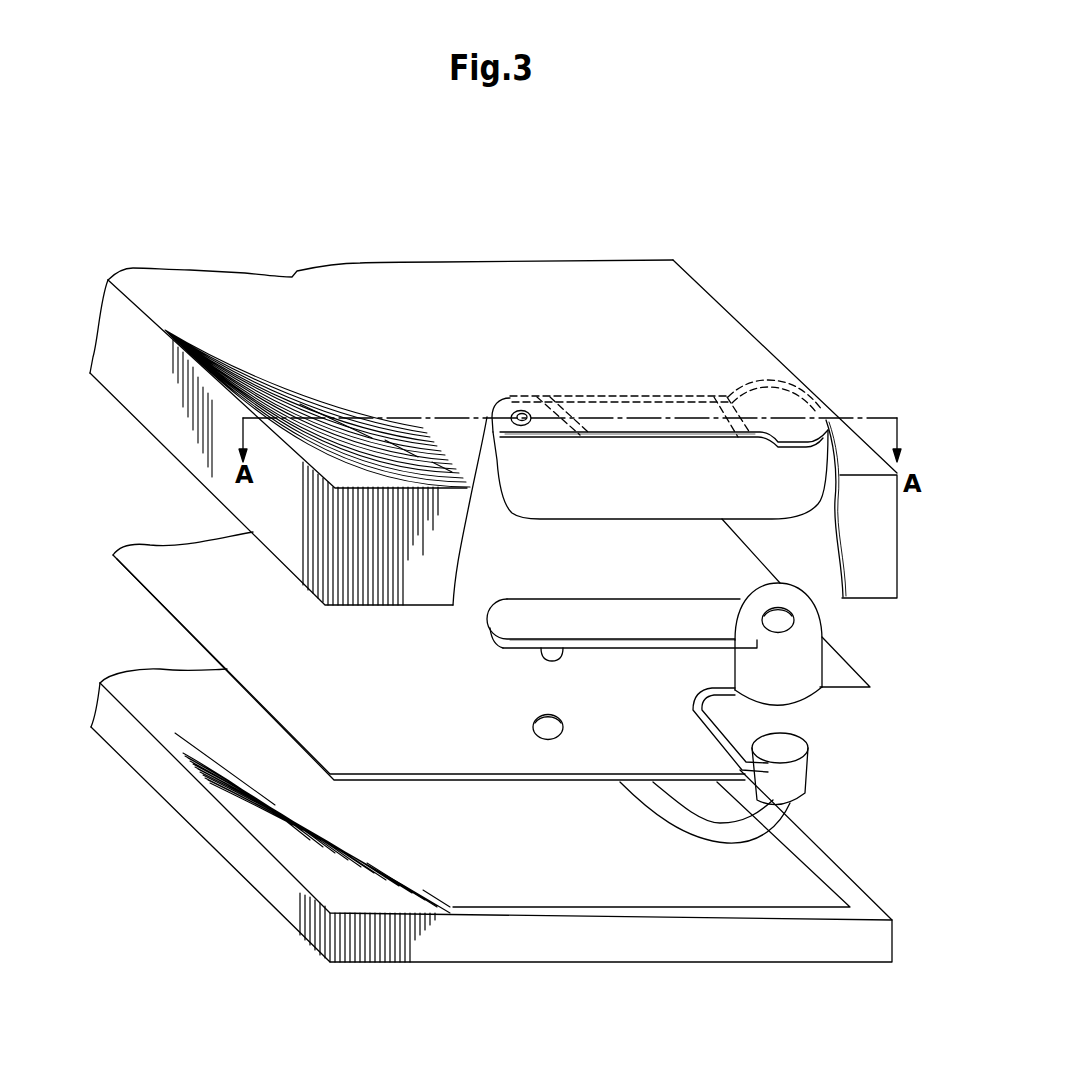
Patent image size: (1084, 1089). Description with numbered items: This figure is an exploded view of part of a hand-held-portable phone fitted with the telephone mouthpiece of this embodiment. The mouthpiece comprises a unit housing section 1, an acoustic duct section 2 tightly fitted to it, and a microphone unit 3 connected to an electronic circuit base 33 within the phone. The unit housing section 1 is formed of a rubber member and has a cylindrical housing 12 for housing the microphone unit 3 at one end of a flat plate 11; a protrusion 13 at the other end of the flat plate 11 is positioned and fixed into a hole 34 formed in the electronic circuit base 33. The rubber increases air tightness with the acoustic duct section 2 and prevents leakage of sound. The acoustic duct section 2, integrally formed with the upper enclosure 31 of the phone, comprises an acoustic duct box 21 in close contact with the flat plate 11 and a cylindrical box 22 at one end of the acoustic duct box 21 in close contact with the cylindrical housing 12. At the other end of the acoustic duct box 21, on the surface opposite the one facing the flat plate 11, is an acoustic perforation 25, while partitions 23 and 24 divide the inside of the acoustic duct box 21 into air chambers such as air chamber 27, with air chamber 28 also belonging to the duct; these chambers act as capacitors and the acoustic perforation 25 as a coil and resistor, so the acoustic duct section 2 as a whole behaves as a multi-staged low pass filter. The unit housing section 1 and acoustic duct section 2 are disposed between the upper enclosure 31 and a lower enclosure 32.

The unit housing section 1 is at (805, 628).
The acoustic duct section 2 is at (815, 460).
The microphone unit 3 is at (798, 785).
The flat plate 11 is at (700, 650).
The cylindrical housing 12 is at (810, 688).
The protrusion 13 is at (547, 652).
The acoustic duct box 21 is at (520, 489).
The cylindrical box 22 is at (778, 522).
The partition 23 is at (547, 397).
The partition 24 is at (713, 430).
The acoustic perforation 25 is at (511, 403).
The air chamber 27 is at (610, 433).
The air chamber 28 is at (778, 437).
The upper enclosure 31 is at (673, 290).
The lower enclosure 32 is at (300, 850).
The electronic circuit base 33 is at (367, 758).
The hole 34 is at (533, 735).